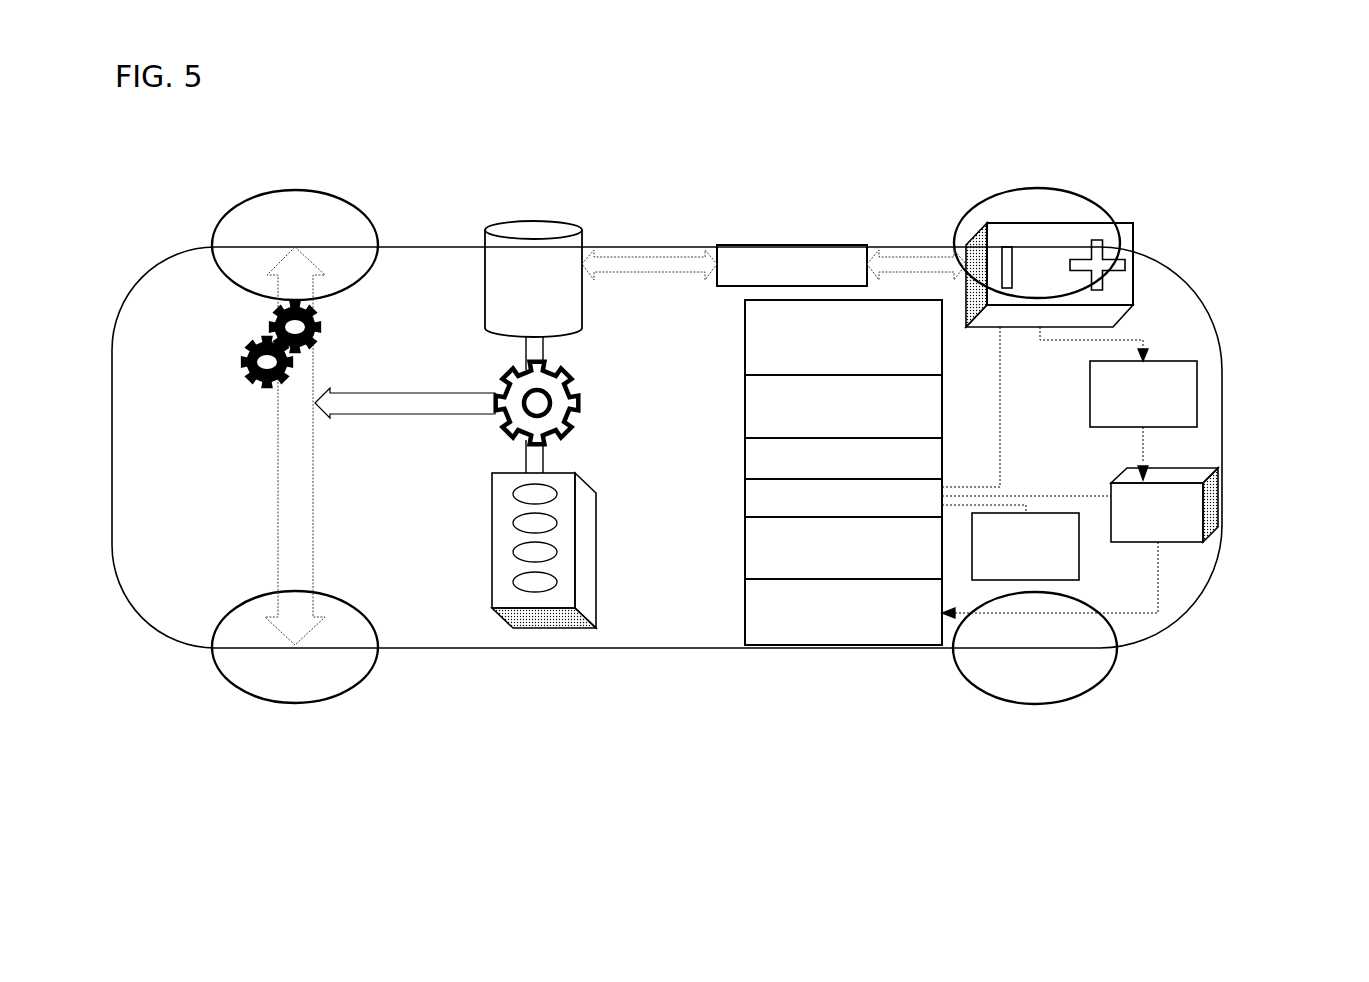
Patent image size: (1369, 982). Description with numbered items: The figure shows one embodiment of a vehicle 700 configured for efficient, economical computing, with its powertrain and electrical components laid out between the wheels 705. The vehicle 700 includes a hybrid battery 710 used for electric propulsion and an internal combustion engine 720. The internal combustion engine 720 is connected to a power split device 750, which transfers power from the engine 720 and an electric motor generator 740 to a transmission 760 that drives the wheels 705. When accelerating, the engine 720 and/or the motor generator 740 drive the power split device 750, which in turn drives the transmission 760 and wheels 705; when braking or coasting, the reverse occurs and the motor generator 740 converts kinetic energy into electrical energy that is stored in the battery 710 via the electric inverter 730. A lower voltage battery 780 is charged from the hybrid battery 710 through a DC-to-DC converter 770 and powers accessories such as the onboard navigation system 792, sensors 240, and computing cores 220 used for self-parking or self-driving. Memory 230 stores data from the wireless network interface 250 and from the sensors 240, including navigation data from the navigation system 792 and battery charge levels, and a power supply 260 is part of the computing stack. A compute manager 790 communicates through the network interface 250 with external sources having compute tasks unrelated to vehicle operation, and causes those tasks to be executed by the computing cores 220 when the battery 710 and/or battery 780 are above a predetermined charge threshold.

The vehicle 700 is at (1262, 245).
The wheels 705 is at (285, 182).
The battery 710 is at (1125, 222).
The internal combustion engine 720 is at (492, 480).
The electric inverter 730 is at (778, 245).
The electric motor generator 740 is at (563, 222).
The power split device 750 is at (553, 378).
The transmission 760 is at (256, 415).
The DC-to-DC converter 770 is at (1198, 375).
The lower voltage battery 780 is at (1198, 545).
The compute manager 790 is at (745, 358).
The onboard navigation system 792 is at (1058, 580).
The computing cores 220 is at (745, 403).
The memory 230 is at (745, 455).
The sensors 240 is at (745, 495).
The network interface 250 is at (745, 533).
The power supply 260 is at (745, 596).